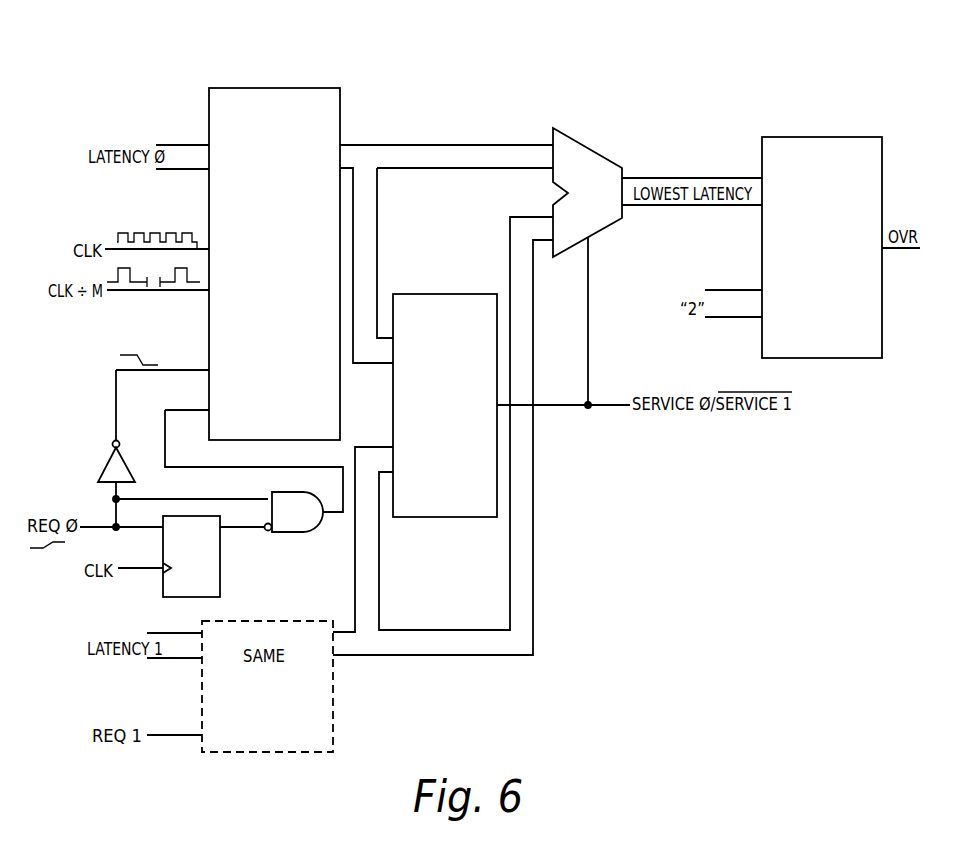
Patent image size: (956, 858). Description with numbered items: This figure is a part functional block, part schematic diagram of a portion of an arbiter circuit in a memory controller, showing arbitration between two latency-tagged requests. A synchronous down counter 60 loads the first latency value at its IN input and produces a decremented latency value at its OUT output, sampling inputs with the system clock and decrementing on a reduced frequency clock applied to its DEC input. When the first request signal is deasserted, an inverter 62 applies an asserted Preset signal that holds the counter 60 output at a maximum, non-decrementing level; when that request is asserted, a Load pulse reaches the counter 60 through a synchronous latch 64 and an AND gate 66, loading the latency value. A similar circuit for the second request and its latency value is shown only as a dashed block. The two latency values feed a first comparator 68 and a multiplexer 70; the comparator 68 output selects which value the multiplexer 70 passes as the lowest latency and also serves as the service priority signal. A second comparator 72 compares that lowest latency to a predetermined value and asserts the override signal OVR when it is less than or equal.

The synchronous down counter 60 is at (300, 88).
The inverter 62 is at (103, 472).
The synchronous latch 64 is at (220, 570).
The AND gate 66 is at (305, 532).
The first comparator 68 is at (440, 294).
The multiplexer 70 is at (598, 150).
The second comparator 72 is at (770, 137).